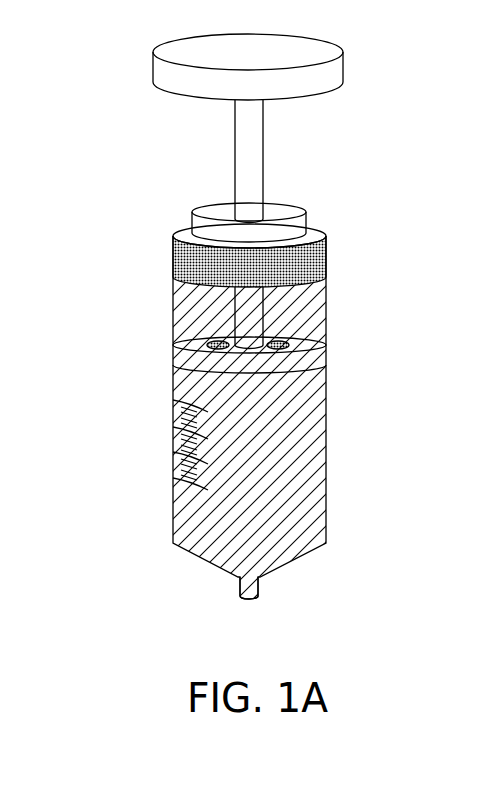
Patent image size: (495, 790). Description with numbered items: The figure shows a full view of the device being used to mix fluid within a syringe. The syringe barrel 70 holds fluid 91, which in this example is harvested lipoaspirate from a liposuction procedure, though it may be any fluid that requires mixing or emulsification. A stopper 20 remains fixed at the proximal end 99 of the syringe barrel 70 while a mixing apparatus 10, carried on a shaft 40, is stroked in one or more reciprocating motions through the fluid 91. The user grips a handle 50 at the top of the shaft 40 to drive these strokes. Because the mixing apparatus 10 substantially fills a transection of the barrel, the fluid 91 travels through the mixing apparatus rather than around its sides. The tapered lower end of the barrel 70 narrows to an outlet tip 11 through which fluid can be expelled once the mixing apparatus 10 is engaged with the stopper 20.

The mixing apparatus 10 is at (172, 352).
The outlet tip 11 is at (279, 566).
The stopper 20 is at (182, 262).
The shaft 40 is at (263, 135).
The handle 50 is at (153, 70).
The syringe barrel 70 is at (327, 445).
The fluid 91 is at (310, 318).
The proximal end 99 is at (187, 233).